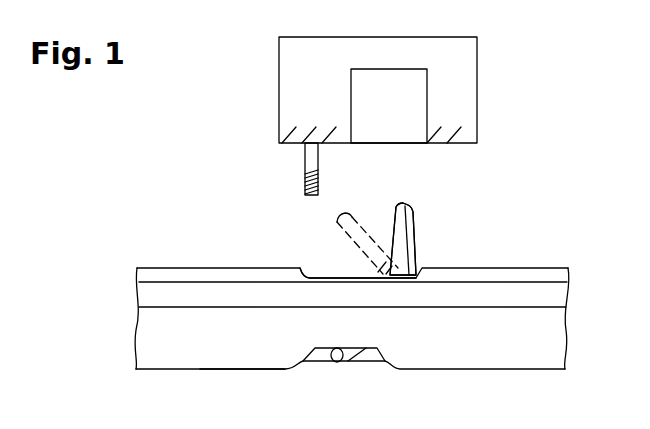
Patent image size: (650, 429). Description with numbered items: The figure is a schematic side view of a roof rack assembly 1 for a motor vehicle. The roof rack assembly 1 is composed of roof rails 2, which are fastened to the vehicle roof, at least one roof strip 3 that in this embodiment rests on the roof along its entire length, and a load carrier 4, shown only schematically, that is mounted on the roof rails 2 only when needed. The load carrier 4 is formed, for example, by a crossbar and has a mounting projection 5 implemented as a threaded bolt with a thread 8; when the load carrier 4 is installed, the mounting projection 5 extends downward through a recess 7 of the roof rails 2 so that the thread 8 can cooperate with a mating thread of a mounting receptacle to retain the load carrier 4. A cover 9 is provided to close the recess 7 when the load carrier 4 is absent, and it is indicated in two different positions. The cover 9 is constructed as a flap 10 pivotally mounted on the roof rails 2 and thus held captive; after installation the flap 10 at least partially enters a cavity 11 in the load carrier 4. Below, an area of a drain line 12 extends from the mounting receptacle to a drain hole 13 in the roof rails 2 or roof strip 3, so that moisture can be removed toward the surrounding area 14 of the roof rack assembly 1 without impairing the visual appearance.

The roof rack assembly 1 is at (546, 234).
The roof rails 2 is at (101, 351).
The roof strip 3 is at (193, 360).
The load carrier 4 is at (503, 84).
The mounting projection 5 is at (306, 160).
The recess 7 is at (313, 272).
The thread 8 is at (318, 180).
The cover 9 is at (406, 210).
The flap 10 is at (406, 210).
The cavity 11 is at (402, 113).
The drain line 12 is at (336, 370).
The drain hole 13 is at (372, 370).
The surrounding area 14 is at (292, 416).